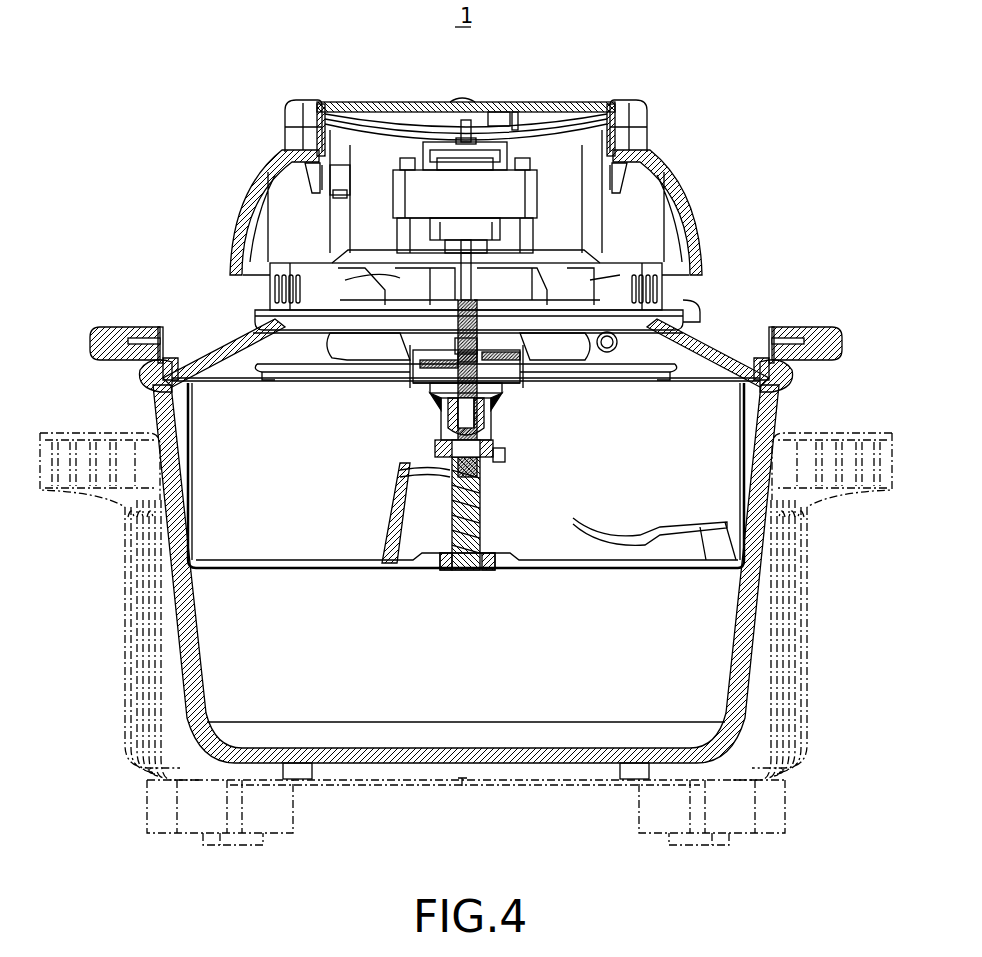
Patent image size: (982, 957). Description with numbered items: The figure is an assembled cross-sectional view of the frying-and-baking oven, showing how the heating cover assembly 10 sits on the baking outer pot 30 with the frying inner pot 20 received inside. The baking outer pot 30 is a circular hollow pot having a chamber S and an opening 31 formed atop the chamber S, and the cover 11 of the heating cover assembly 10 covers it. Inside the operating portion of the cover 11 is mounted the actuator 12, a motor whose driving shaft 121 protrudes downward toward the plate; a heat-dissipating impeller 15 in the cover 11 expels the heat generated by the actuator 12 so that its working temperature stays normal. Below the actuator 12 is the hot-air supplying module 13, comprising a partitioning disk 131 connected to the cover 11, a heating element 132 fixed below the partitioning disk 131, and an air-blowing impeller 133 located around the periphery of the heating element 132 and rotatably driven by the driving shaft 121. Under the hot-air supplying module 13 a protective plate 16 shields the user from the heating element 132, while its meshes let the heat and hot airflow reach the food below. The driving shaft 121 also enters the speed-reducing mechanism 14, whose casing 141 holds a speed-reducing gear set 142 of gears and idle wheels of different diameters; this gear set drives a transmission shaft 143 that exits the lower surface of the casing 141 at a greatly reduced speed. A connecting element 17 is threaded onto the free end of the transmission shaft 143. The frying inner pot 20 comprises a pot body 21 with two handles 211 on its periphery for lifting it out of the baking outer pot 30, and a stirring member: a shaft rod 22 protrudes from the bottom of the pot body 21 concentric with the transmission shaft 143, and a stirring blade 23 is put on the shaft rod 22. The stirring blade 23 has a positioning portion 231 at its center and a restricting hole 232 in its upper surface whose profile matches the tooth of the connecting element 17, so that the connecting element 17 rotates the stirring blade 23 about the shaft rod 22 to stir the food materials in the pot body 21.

The heating cover assembly 10 is at (246, 177).
The cover 11 is at (537, 103).
The actuator 12 is at (523, 196).
The driving shaft 121 is at (532, 277).
The hot-air supplying module 13 is at (296, 343).
The partitioning disk 131 is at (678, 310).
The heating element 132 is at (660, 326).
The air-blowing impeller 133 is at (620, 370).
The speed-reducing mechanism 14 is at (604, 392).
The casing 141 is at (523, 363).
The speed-reducing gear set 142 is at (490, 363).
The transmission shaft 143 is at (478, 378).
The heat-dissipating impeller 15 is at (380, 283).
The protective plate 16 is at (300, 383).
The connecting element 17 is at (440, 400).
The frying inner pot 20 is at (751, 494).
The pot body 21 is at (770, 417).
The handles 211 is at (797, 328).
The shaft rod 22 is at (455, 515).
The stirring blade 23 is at (573, 519).
The positioning portion 231 is at (440, 432).
The restricting hole 232 is at (432, 386).
The baking outer pot 30 is at (175, 638).
The opening 31 is at (117, 327).
The chamber S is at (670, 657).